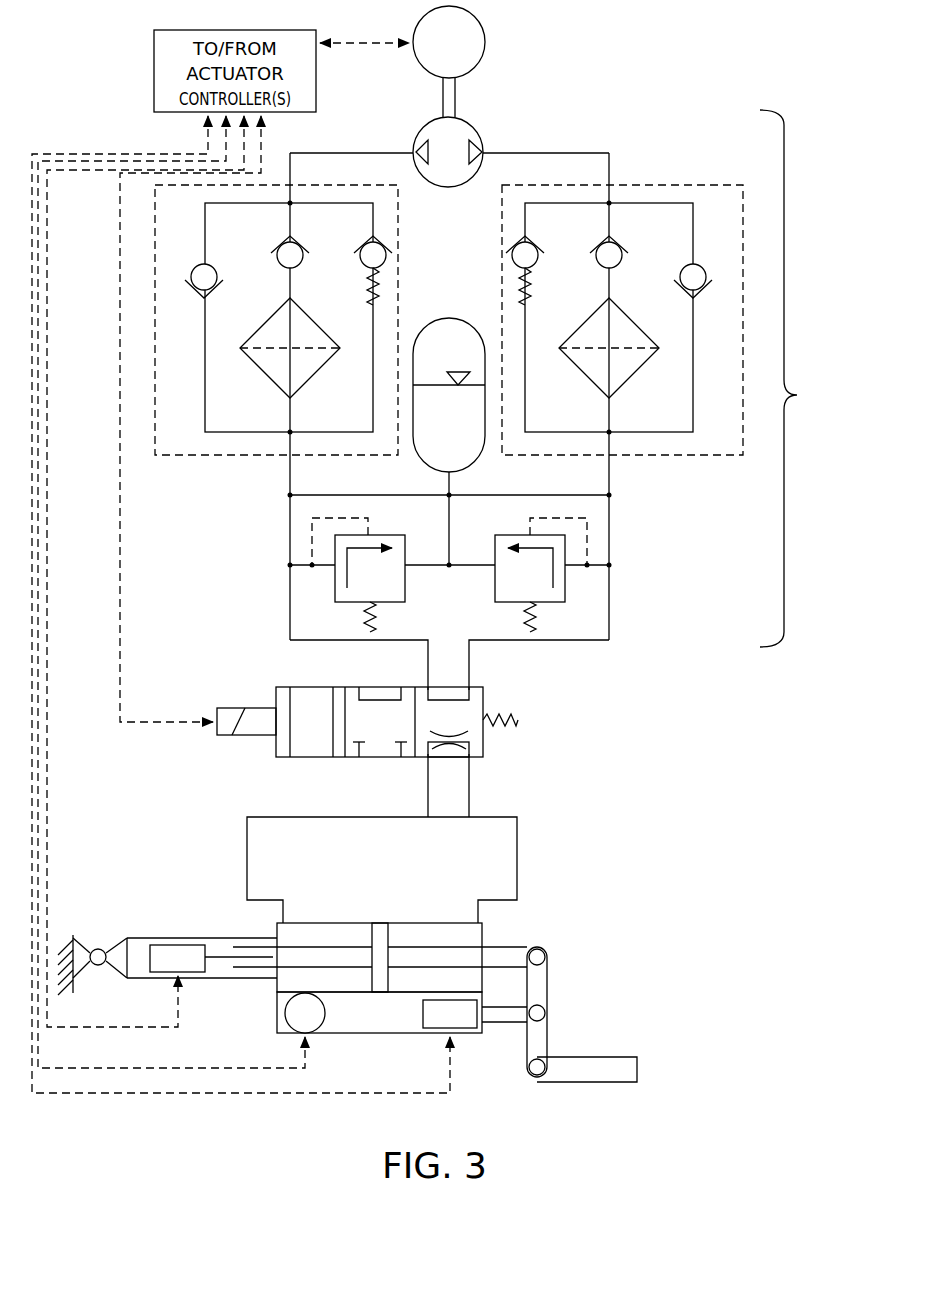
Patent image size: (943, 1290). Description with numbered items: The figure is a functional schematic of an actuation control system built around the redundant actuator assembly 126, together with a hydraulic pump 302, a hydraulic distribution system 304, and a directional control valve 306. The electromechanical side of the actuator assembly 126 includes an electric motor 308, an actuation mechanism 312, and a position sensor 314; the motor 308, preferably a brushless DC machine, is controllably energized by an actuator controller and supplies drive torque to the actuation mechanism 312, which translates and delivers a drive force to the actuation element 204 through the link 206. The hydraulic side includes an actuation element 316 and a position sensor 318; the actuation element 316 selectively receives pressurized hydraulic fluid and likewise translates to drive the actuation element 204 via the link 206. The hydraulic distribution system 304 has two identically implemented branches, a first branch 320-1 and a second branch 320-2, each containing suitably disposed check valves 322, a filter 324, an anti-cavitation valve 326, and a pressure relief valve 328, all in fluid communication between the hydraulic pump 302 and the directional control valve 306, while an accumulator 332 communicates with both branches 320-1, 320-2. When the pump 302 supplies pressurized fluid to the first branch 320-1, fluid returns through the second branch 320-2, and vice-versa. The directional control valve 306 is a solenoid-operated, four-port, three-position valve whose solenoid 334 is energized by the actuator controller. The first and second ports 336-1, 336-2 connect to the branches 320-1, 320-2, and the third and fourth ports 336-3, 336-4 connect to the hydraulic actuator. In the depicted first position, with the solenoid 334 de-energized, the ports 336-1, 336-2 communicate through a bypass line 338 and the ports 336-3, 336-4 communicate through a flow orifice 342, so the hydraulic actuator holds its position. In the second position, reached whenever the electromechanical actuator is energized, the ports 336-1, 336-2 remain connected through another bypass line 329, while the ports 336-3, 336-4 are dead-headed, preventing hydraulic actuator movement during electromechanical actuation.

The actuator assembly 126 is at (343, 895).
The actuation element 204 is at (585, 1082).
The link 206 is at (548, 986).
The hydraulic pump 302 is at (498, 96).
The hydraulic distribution system 304 is at (804, 378).
The directional control valve 306 is at (451, 727).
The electric motor 308 is at (284, 1013).
The actuation mechanism 312 is at (503, 1025).
The position sensor 314 is at (423, 1015).
The actuation element 316 is at (510, 950).
The position sensor 318 is at (168, 945).
The first branch 320-1 is at (622, 368).
The second branch 320-2 is at (276, 368).
The check valves 322 is at (218, 266).
The filter 324 is at (362, 244).
The anti-cavitation valve 326 is at (322, 372).
The pressure relief valve 328 is at (388, 535).
The bypass line 329 is at (378, 700).
The accumulator 332 is at (447, 318).
The solenoid 334 is at (230, 708).
The first port 336-1 is at (470, 687).
The second port 336-2 is at (427, 686).
The third port 336-3 is at (471, 759).
The fourth port 336-4 is at (428, 759).
The bypass line 338 is at (447, 703).
The flow orifice 342 is at (468, 733).